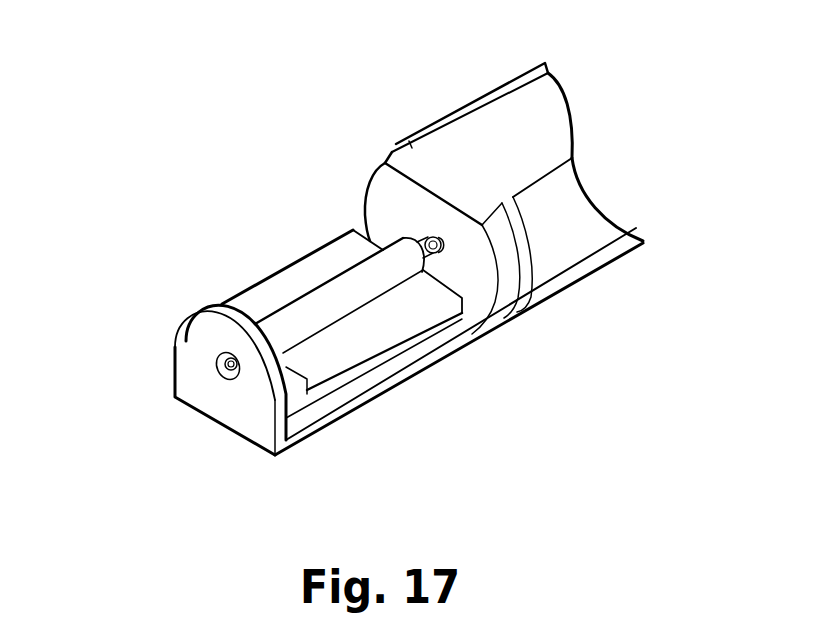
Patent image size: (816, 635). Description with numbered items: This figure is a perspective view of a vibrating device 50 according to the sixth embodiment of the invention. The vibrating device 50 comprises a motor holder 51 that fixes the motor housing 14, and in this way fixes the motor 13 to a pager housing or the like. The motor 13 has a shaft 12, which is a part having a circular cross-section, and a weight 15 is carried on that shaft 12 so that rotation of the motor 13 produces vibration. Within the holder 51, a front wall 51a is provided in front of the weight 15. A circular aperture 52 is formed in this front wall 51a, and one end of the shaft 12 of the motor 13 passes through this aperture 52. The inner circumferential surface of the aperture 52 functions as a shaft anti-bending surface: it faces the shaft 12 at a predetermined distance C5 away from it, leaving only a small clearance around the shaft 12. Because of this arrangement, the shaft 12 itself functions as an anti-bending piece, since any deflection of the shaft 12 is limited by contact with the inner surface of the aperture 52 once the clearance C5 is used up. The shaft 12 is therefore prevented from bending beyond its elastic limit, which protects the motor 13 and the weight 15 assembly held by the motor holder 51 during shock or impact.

The vibrating device 50 is at (215, 118).
The motor holder 51 is at (580, 237).
The front wall 51a is at (182, 372).
The circular aperture 52 is at (240, 380).
The shaft 12 is at (222, 384).
The predetermined distance C5 is at (218, 350).
The weight 15 is at (358, 368).
The motor 13 is at (545, 125).
The motor housing 14 is at (468, 128).